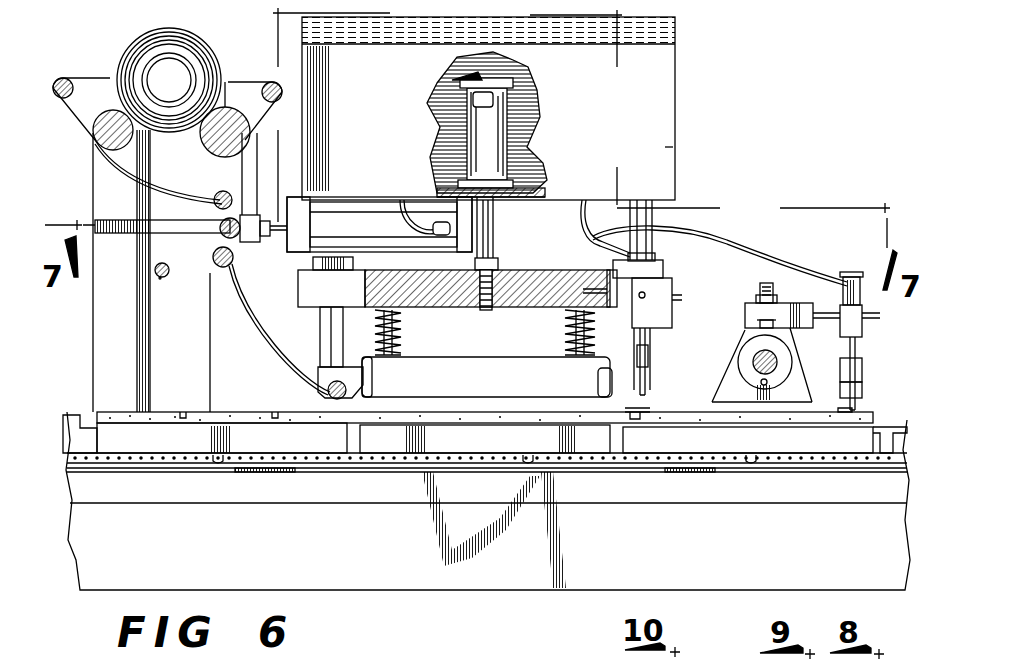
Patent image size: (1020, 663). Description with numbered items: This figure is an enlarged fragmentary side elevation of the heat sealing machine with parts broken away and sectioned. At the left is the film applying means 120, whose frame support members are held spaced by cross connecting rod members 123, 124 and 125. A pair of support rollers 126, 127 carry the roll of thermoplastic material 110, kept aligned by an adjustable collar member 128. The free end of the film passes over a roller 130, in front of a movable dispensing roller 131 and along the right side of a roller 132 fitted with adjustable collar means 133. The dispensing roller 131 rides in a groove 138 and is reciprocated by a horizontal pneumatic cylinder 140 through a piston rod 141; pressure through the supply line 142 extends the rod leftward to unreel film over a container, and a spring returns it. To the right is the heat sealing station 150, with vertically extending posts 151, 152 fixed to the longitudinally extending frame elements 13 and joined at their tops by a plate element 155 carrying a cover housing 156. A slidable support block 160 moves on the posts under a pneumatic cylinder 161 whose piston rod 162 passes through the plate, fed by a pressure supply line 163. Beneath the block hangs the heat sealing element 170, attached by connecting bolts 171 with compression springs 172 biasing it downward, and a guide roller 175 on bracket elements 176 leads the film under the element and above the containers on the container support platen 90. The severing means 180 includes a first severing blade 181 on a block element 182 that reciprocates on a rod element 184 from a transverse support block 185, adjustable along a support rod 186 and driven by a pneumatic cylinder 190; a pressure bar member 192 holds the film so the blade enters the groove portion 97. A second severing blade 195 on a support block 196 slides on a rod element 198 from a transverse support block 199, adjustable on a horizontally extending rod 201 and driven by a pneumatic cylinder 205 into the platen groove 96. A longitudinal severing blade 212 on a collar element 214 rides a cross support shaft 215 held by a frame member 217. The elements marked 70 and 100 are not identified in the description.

The longitudinally extending frame element 13 is at (338, 551).
The support block 70 is at (190, 436).
The container support platen 90 is at (121, 412).
The platen groove 96 is at (648, 425).
The groove portion 97 is at (844, 415).
The support block 100 is at (253, 412).
The roll of thermoplastic material 110 is at (205, 45).
The film applying means 120 is at (110, 79).
The cross connecting rod member 123 is at (78, 68).
The cross connecting rod member 124 is at (274, 82).
The cross connecting rod member 125 is at (161, 279).
The support roller 126 is at (133, 146).
The support roller 127 is at (225, 143).
The adjustable collar member 128 is at (225, 85).
The roller 130 is at (213, 198).
The movable dispensing roller 131 is at (220, 224).
The roller 132 is at (170, 268).
The adjustable collar means 133 is at (213, 254).
The groove 138 is at (143, 238).
The pneumatic cylinder 140 is at (385, 218).
The piston rod 141 is at (272, 236).
The supply line 142 is at (412, 215).
The heat sealing station 150 is at (677, 103).
The vertically extending post 151 is at (318, 330).
The vertically extending post 152 is at (636, 411).
The plate element 155 is at (512, 198).
The cover housing 156 is at (663, 148).
The slidable support block 160 is at (450, 300).
The pneumatic cylinder 161 is at (508, 150).
The piston rod 162 is at (494, 252).
The pressure supply line 163 is at (470, 78).
The heat sealing element 170 is at (465, 377).
The connecting bolt 171 is at (400, 330).
The compression spring 172 is at (398, 350).
The guide roller 175 is at (328, 390).
The bracket element 176 is at (340, 373).
The severing means 180 is at (752, 302).
The first severing blade 181 is at (838, 396).
The block element 182 is at (862, 372).
The rod element 184 is at (856, 348).
The transverse support block 185 is at (860, 325).
The support rod 186 is at (822, 312).
The pneumatic cylinder 190 is at (850, 272).
The pressure bar member 192 is at (858, 410).
The second severing blade 195 is at (610, 395).
The support block 196 is at (648, 362).
The rod element 198 is at (650, 340).
The transverse support block 199 is at (648, 307).
The horizontally extending rod 201 is at (612, 270).
The pneumatic cylinder 205 is at (648, 258).
The severing blade 212 is at (740, 412).
The collar element 214 is at (740, 372).
The cross support shaft 215 is at (770, 365).
The frame member 217 is at (740, 337).